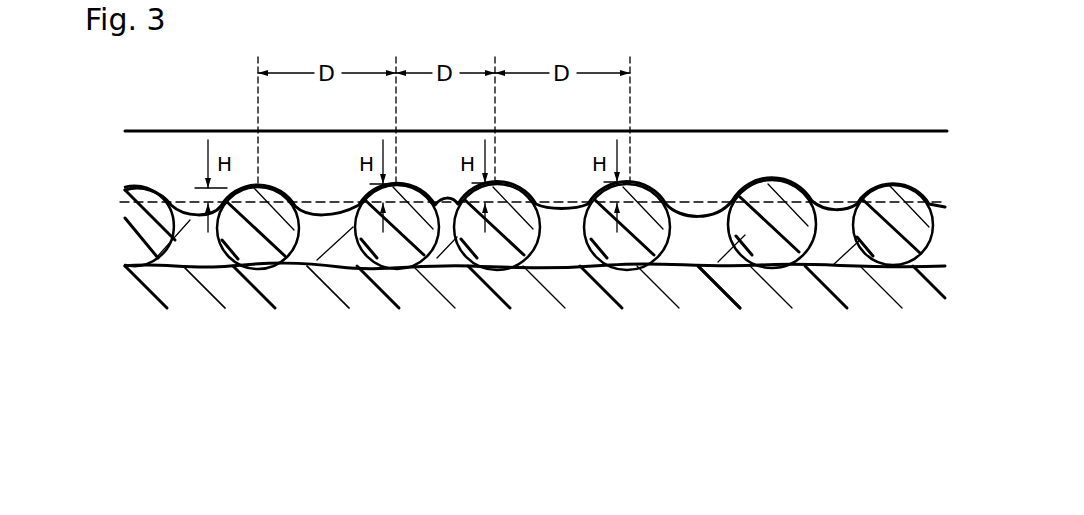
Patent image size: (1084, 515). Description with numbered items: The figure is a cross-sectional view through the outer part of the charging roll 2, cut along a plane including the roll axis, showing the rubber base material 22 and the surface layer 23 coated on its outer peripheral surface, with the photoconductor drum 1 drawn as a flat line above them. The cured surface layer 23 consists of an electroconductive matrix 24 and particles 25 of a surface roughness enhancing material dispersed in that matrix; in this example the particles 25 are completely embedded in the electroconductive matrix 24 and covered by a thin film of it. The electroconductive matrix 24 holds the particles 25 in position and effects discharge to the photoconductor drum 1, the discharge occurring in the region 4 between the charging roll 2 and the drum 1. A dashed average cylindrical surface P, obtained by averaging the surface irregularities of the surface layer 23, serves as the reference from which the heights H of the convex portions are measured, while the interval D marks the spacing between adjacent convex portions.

The photoconductor drum 1 is at (125, 131).
The charging roll 2 is at (112, 176).
The region 4 is at (820, 157).
The rubber base material 22 is at (213, 277).
The surface layer 23 is at (312, 253).
The electroconductive matrix 24 is at (690, 252).
The particles of surface roughness enhancing material 25 is at (582, 228).
The average cylindrical surface P is at (710, 200).